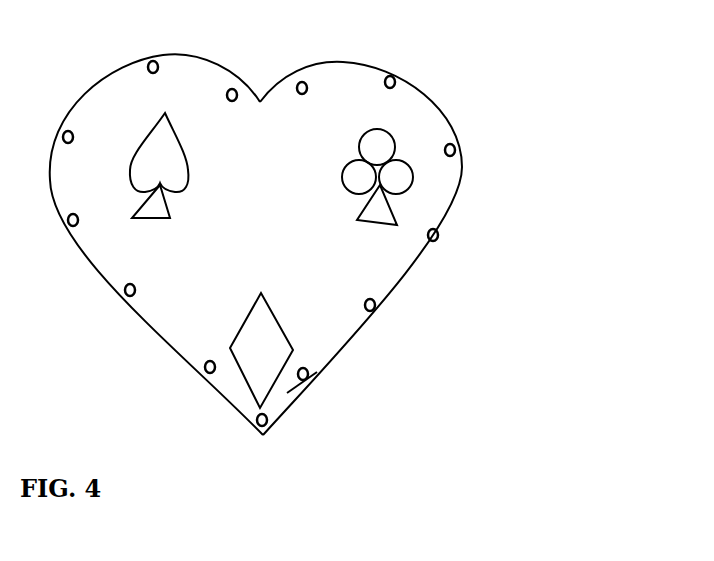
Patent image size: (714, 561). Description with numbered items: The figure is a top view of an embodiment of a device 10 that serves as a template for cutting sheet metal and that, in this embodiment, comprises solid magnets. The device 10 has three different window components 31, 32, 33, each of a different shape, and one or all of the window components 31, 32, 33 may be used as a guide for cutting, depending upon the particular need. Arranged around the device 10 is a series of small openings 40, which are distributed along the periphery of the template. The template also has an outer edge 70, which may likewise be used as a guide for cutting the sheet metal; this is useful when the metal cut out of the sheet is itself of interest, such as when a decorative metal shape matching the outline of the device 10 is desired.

The heart-shaped body 10 is at (413, 82).
The outer edge 70 is at (443, 110).
The holes 40 is at (458, 150).
The window component 31 is at (383, 167).
The window component 32 is at (175, 167).
The window component 33 is at (267, 347).